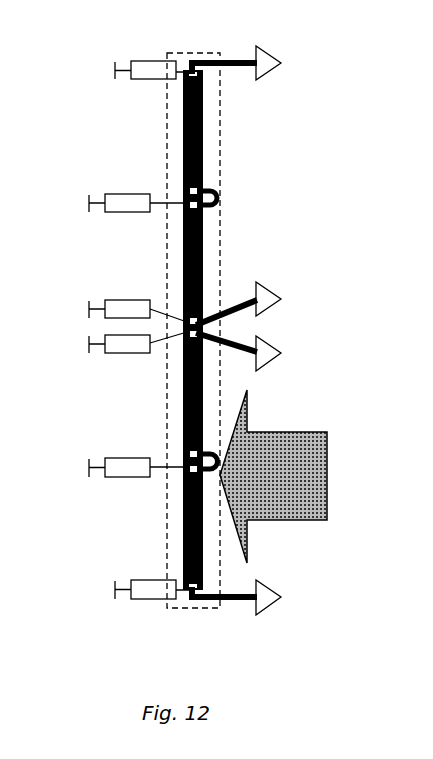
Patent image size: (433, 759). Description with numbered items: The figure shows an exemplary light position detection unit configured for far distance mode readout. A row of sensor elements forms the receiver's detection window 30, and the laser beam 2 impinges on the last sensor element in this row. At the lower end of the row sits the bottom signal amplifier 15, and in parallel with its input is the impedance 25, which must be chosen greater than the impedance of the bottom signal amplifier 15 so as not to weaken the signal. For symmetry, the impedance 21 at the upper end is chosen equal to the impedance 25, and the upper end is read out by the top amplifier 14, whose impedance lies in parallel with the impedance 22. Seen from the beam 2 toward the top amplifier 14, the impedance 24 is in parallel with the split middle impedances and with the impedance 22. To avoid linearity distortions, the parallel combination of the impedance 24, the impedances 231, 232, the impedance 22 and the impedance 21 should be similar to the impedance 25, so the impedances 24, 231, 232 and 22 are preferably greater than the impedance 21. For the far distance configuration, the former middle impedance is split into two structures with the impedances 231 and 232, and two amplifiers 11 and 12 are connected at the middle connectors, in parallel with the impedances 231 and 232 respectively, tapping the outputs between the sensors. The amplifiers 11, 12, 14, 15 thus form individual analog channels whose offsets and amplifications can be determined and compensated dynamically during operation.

The detection window 30 is at (221, 222).
The impedance 21 is at (152, 72).
The impedance 22 is at (125, 205).
The impedance 231 is at (122, 308).
The impedance 232 is at (125, 345).
The impedance 24 is at (125, 470).
The impedance 25 is at (143, 592).
The top amplifier 14 is at (266, 63).
The amplifier 11 is at (266, 299).
The amplifier 12 is at (266, 353).
The bottom signal amplifier 15 is at (266, 597).
The laser beam 2 is at (283, 485).